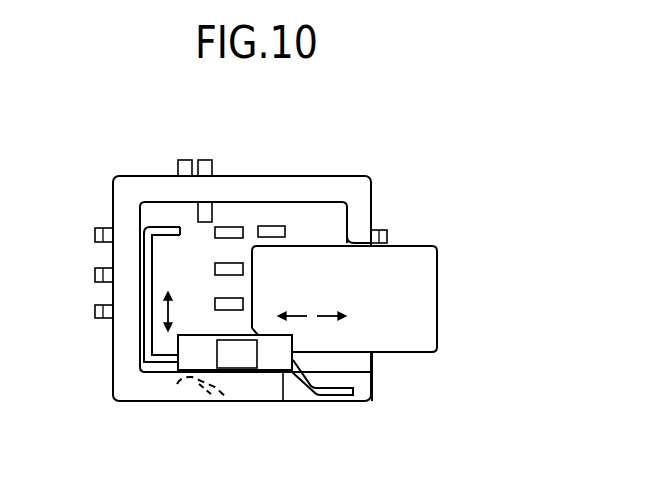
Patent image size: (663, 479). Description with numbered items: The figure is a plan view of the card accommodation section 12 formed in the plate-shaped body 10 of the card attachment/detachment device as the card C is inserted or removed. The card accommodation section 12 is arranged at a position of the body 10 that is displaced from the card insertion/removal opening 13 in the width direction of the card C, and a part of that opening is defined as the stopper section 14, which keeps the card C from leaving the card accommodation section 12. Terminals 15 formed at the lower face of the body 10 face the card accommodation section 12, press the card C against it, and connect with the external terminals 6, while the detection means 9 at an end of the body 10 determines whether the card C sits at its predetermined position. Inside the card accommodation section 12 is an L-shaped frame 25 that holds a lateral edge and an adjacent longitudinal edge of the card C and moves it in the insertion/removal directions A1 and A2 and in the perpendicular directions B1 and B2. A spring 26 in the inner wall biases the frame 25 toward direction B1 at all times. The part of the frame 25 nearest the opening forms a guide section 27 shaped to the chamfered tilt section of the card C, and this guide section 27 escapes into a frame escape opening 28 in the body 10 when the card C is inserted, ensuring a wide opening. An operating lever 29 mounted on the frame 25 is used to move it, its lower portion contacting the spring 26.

The body 10 is at (372, 174).
The card accommodation section 12 is at (248, 205).
The detection means 9 is at (205, 160).
The external terminals 6 is at (93, 273).
The frame 25 is at (150, 226).
The terminals 15 is at (274, 226).
The stopper section 14 is at (337, 217).
The card C is at (420, 310).
The card insertion/removal opening 13 is at (360, 360).
The frame escape opening 28 is at (365, 393).
The operating lever 29 is at (238, 362).
The guide section 27 is at (333, 395).
The spring 26 is at (174, 392).
The direction B1 is at (175, 295).
The direction B2 is at (191, 320).
The direction A1 is at (287, 301).
The direction A2 is at (335, 301).